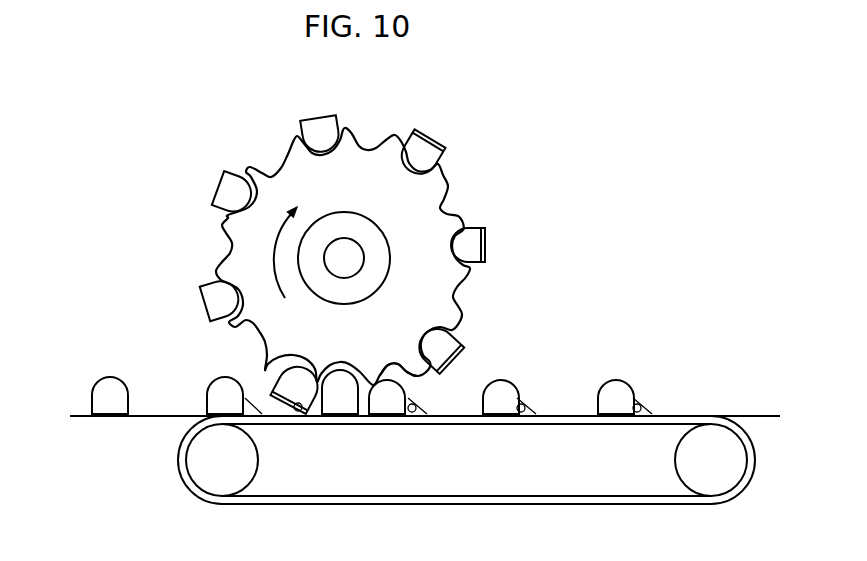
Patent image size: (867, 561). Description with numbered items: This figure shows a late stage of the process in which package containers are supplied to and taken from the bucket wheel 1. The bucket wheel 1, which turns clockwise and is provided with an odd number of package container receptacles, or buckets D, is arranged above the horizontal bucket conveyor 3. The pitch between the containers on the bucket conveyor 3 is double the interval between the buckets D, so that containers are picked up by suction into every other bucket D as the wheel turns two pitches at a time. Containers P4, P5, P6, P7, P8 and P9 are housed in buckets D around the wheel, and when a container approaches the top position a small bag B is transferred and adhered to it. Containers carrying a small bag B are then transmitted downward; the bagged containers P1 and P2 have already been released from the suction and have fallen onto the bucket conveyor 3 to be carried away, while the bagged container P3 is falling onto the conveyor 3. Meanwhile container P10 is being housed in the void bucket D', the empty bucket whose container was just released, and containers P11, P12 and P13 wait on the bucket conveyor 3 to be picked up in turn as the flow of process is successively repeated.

The bucket wheel 1 is at (449, 215).
The bucket conveyor 3 is at (692, 414).
The small bag B is at (437, 148).
The package container receptacle (bucket) D is at (330, 239).
The void bucket D' is at (421, 382).
The package container P1 is at (110, 395).
The package container P2 is at (225, 395).
The package container P3 is at (340, 392).
The package container P4 is at (438, 348).
The package container P5 is at (468, 245).
The package container P6 is at (420, 154).
The package container P7 is at (320, 134).
The package container P8 is at (234, 193).
The package container P9 is at (221, 299).
The package container P10 is at (297, 387).
The package container P11 is at (387, 397).
The package container P12 is at (501, 397).
The package container P13 is at (616, 397).